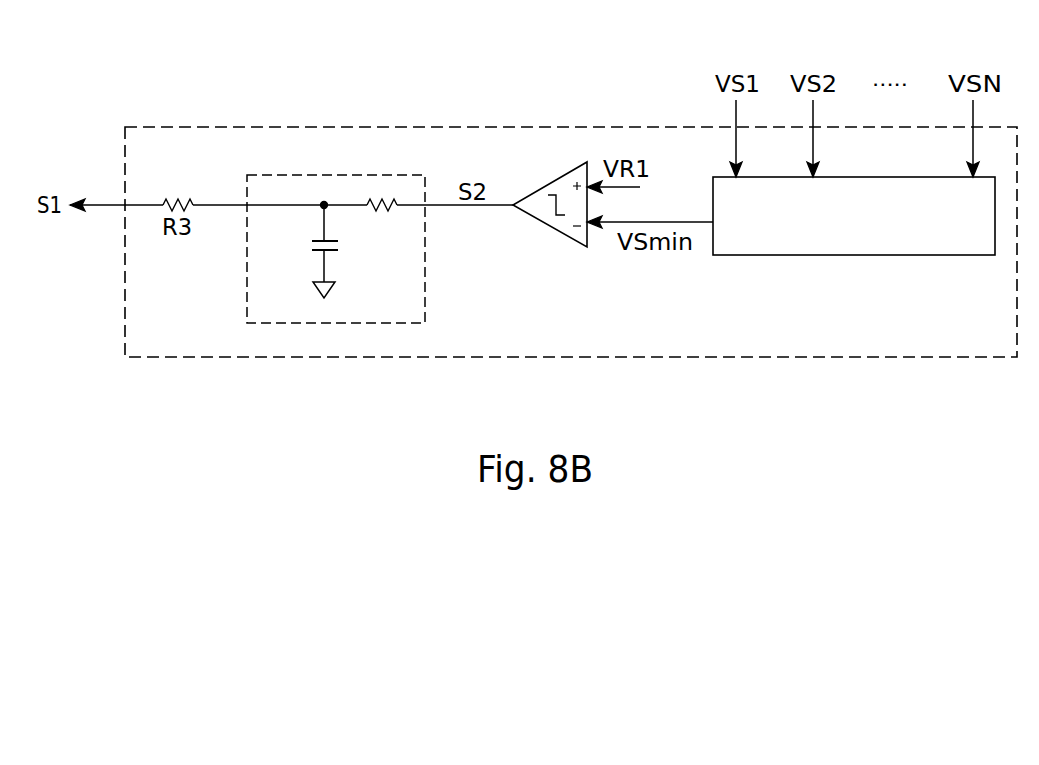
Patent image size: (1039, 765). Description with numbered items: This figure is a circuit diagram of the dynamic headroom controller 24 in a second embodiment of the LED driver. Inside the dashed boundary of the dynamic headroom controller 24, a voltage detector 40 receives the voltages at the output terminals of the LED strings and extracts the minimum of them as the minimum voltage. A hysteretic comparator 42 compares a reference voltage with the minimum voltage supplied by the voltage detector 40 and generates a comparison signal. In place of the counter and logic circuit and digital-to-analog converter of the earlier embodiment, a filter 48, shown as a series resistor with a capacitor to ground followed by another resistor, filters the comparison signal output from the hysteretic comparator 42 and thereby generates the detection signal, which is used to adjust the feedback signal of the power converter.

The dynamic headroom controller 24 is at (543, 126).
The filter 48 is at (247, 263).
The hysteretic comparator 42 is at (537, 222).
The voltage detector 40 is at (858, 257).